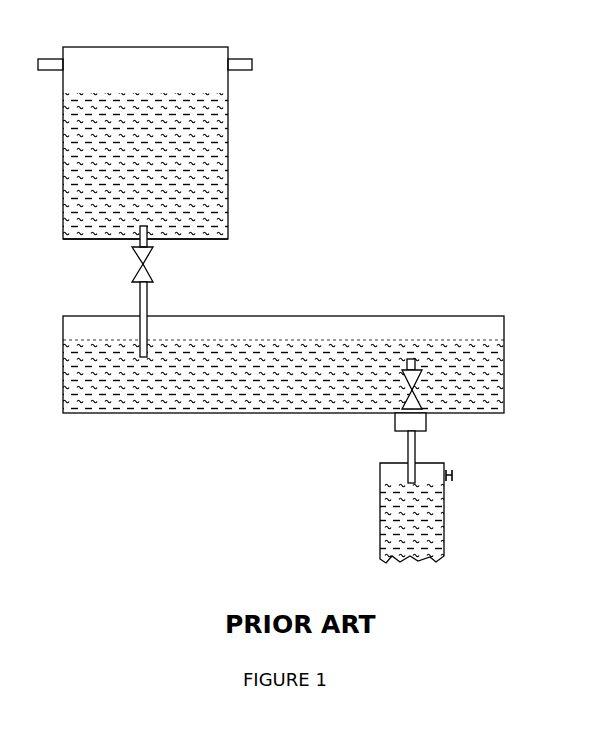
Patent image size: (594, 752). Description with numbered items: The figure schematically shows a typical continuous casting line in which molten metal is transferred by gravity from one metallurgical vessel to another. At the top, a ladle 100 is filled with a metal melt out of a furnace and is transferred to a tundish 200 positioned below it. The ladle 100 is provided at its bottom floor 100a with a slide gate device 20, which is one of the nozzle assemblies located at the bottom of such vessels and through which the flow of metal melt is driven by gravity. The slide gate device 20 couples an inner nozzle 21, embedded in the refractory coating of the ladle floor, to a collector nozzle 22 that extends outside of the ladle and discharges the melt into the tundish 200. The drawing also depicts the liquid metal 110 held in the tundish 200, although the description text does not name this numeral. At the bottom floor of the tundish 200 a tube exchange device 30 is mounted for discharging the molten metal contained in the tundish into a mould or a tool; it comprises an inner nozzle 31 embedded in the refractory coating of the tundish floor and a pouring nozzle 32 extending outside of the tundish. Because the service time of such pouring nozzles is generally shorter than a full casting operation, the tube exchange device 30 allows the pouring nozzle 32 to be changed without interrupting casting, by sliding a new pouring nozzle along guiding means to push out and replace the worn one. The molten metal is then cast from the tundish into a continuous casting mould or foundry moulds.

The ladle 100 is at (229, 86).
The bottom floor of the ladle 100a is at (121, 240).
The inner nozzle 21 is at (148, 228).
The slide gate device 20 is at (150, 274).
The collector nozzle 22 is at (148, 298).
The tundish 200 is at (279, 316).
The liquid in second tank 110 is at (313, 362).
The inner nozzle 31 is at (417, 362).
The tube exchange device 30 is at (395, 424).
The pouring nozzle 32 is at (418, 445).